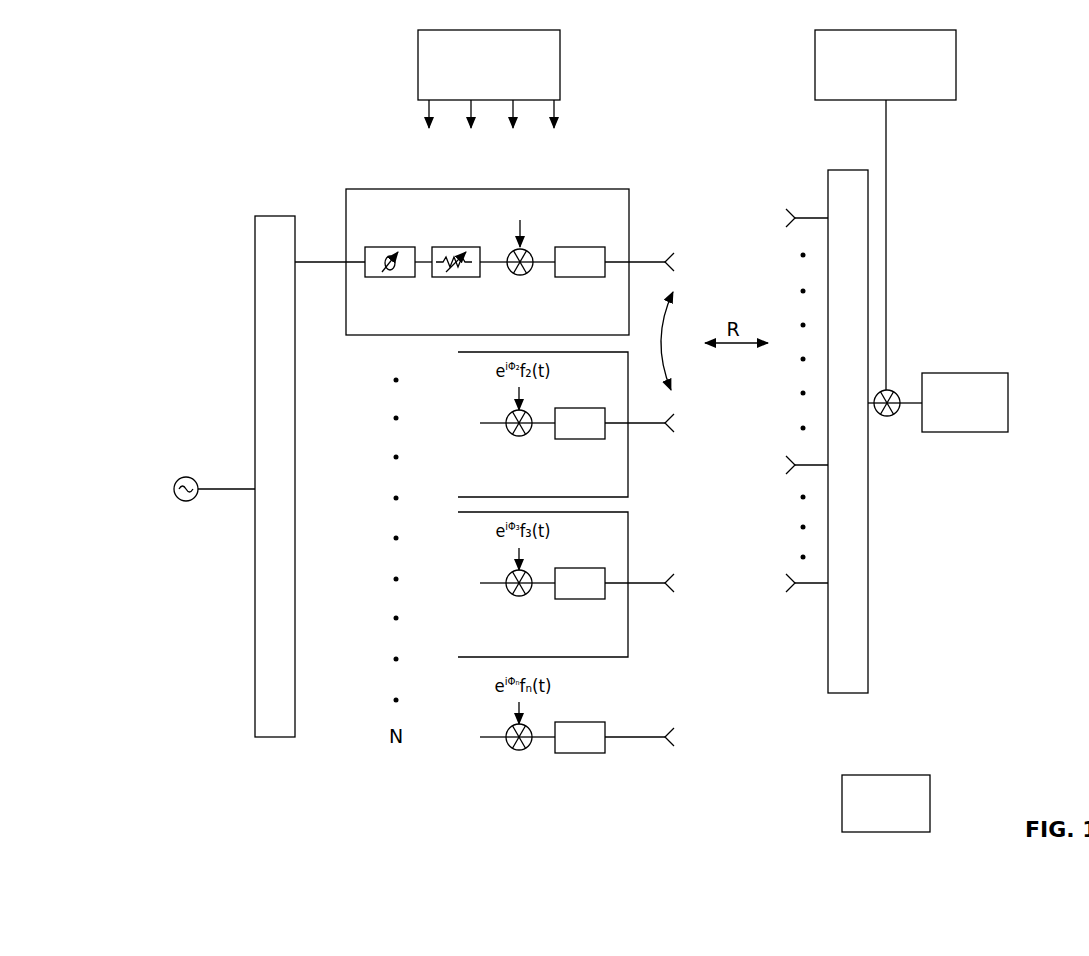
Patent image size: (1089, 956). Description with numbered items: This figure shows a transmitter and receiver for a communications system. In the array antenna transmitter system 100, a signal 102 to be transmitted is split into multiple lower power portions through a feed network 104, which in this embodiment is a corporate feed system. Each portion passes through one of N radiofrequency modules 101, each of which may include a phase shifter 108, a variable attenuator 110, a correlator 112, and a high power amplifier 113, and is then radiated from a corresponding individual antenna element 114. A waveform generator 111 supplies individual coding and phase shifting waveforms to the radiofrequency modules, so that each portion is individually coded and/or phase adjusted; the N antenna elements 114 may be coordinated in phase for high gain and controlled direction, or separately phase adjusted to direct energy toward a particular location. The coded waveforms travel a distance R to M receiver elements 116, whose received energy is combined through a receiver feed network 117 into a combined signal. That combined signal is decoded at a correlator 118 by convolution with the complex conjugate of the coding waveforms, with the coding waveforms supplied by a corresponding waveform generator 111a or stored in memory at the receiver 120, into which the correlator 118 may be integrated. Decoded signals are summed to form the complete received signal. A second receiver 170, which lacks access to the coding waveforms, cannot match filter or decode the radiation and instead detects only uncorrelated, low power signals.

The array antenna transmitter system 100 is at (203, 754).
The radiofrequency module 101 is at (350, 346).
The signal 102 is at (186, 501).
The feed network 104 is at (255, 343).
The phase shifter 108 is at (390, 277).
The variable attenuator 110 is at (457, 277).
The waveform generator 111 is at (560, 63).
The waveform generator 111a is at (956, 63).
The correlator 112 is at (520, 275).
The high power amplifier 113 is at (580, 277).
The antenna element 114 is at (655, 498).
The receiver element 116 is at (810, 215).
The receiver feed network 117 is at (868, 511).
The correlator 118 is at (887, 416).
The receiver 120 is at (993, 373).
The second receiver 170 is at (913, 775).